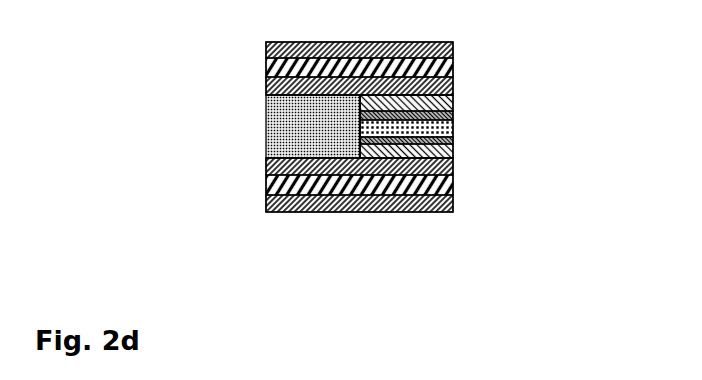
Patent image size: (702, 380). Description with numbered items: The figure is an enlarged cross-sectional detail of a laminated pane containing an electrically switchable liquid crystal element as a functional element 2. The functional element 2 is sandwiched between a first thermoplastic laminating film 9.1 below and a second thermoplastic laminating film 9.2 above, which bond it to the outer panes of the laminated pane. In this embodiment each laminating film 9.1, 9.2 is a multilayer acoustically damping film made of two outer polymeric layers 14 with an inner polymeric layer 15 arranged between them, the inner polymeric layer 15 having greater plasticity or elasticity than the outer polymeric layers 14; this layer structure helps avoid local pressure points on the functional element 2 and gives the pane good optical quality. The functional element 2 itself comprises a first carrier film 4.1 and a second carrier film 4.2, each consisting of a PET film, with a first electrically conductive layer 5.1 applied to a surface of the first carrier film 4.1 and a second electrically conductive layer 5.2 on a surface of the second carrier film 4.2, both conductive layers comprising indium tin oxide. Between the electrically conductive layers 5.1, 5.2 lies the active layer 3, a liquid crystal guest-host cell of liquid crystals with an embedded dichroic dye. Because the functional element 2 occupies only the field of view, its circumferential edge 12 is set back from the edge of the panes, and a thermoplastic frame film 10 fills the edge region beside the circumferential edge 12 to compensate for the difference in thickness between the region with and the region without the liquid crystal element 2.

The functional element 2 is at (533, 62).
The active layer 3 is at (420, 128).
The first carrier film 4.1 is at (425, 152).
The second carrier film 4.2 is at (425, 103).
The first electrically conductive layer 5.1 is at (430, 139).
The second electrically conductive layer 5.2 is at (430, 115).
The first thermoplastic laminating film 9.1 is at (188, 157).
The second thermoplastic laminating film 9.2 is at (187, 3).
The thermoplastic frame film 10 is at (266, 112).
The circumferential edge 12 is at (359, 120).
The outer polymeric layer 14 is at (266, 47).
The inner polymeric layer 15 is at (266, 67).